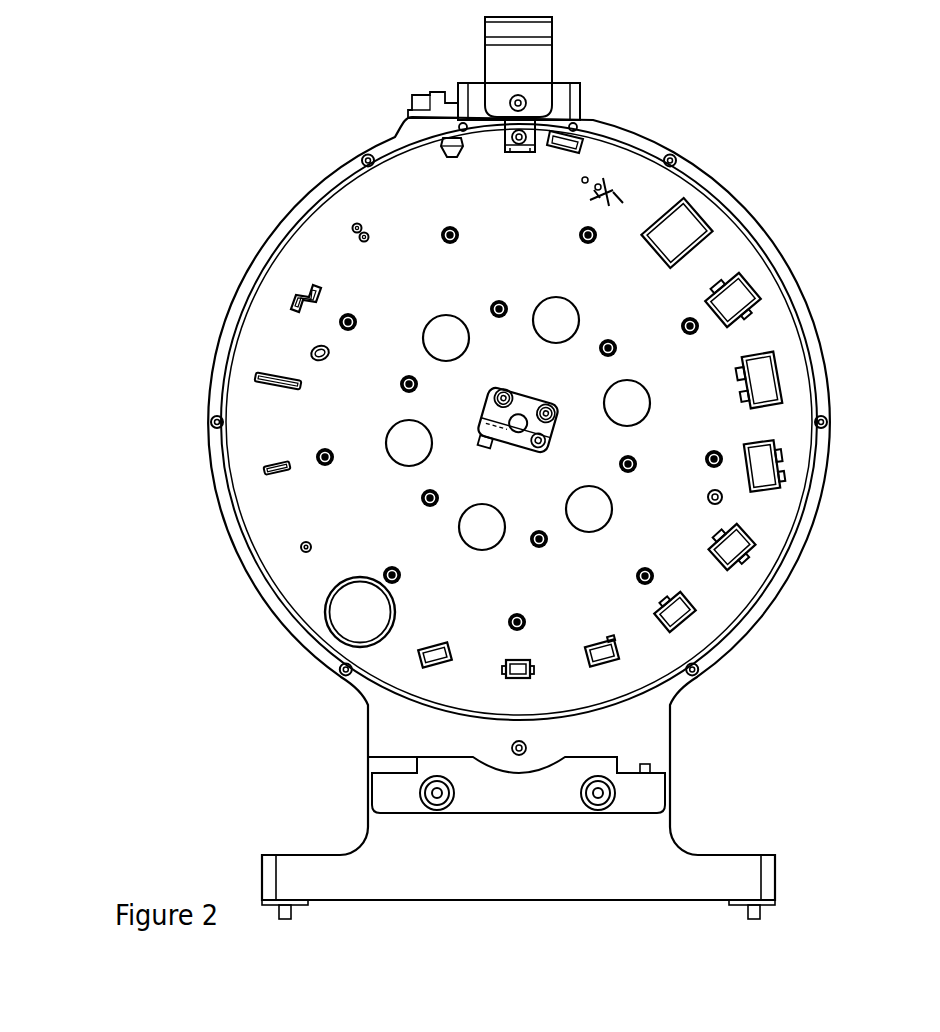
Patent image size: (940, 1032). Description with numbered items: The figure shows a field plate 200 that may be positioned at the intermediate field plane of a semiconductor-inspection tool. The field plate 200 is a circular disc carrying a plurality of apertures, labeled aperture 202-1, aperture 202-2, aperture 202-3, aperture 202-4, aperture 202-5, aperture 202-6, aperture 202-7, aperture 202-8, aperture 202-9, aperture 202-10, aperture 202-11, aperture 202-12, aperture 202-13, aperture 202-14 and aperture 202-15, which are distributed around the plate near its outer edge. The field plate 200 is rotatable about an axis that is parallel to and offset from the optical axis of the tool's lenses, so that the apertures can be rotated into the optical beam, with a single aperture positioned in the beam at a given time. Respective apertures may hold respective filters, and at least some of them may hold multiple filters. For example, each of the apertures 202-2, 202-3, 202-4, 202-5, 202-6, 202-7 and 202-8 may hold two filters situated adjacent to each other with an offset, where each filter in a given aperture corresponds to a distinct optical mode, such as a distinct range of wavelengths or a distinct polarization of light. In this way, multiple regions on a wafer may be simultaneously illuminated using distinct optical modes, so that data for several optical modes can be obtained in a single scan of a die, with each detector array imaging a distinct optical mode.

The field plate 200 is at (350, 72).
The aperture 202-1 is at (677, 233).
The aperture 202-2 is at (735, 298).
The aperture 202-3 is at (765, 378).
The aperture 202-4 is at (762, 465).
The aperture 202-5 is at (733, 546).
The aperture 202-6 is at (685, 615).
The aperture 202-7 is at (615, 660).
The aperture 202-8 is at (530, 676).
The aperture 202-9 is at (426, 661).
The aperture 202-10 is at (360, 608).
The aperture 202-11 is at (300, 550).
The aperture 202-12 is at (265, 470).
The aperture 202-13 is at (258, 385).
The aperture 202-14 is at (300, 295).
The aperture 202-15 is at (355, 228).